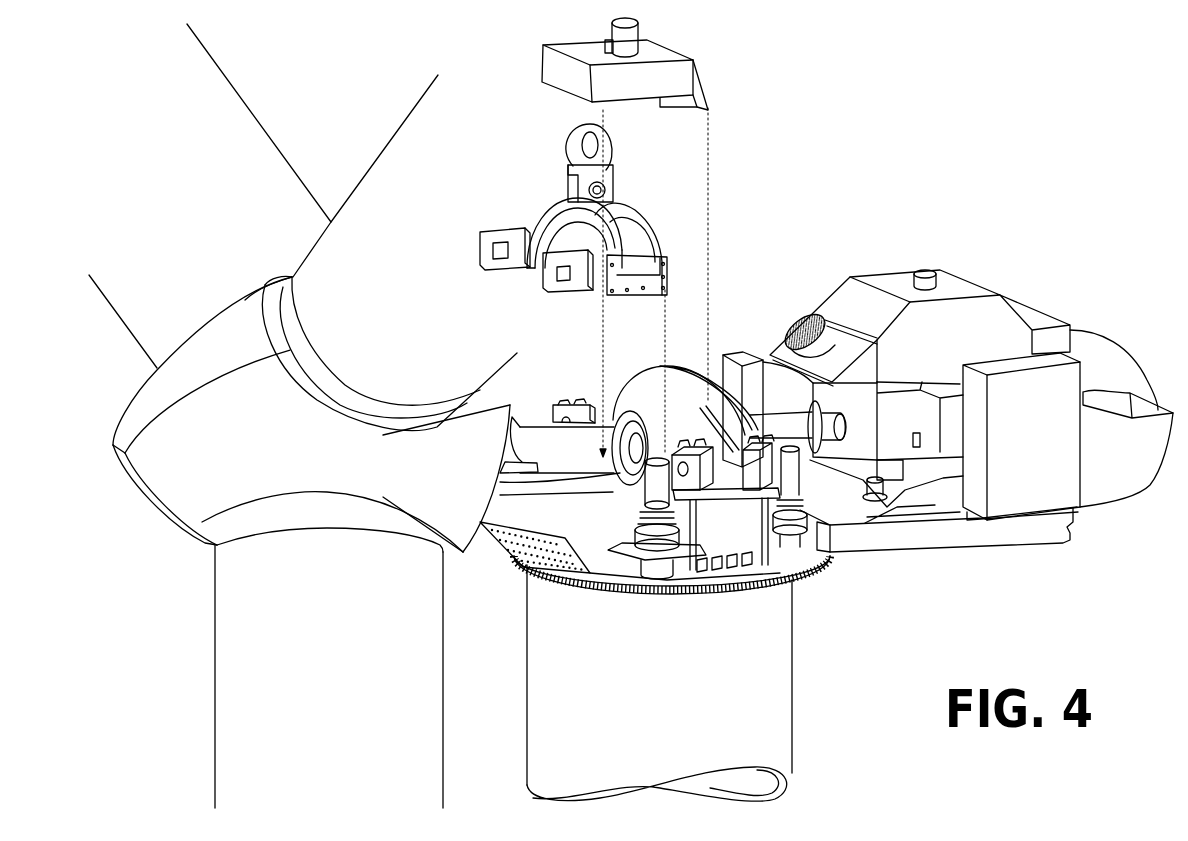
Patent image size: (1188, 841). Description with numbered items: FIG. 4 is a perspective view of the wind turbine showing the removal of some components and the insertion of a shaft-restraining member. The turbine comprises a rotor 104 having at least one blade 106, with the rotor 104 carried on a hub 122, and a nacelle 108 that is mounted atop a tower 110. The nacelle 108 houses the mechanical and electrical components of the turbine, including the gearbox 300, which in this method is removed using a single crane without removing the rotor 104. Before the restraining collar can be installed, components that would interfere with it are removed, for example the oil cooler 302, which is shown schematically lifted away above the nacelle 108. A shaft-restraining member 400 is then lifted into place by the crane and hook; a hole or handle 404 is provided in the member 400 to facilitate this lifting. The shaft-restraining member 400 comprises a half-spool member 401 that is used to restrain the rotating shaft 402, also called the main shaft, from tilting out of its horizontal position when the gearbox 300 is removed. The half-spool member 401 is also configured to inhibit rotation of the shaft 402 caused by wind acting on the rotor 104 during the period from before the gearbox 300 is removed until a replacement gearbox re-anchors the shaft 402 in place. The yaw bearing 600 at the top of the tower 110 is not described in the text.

The rotor 104 is at (218, 264).
The blade 106 is at (412, 148).
The nacelle 108 is at (811, 208).
The tower 110 is at (788, 687).
The hub 122 is at (212, 330).
The gearbox 300 is at (742, 355).
The oil cooler 302 is at (663, 42).
The shaft-restraining member 400 is at (563, 196).
The half-spool member 401 is at (540, 208).
The rotating shaft 402 is at (545, 415).
The handle 404 is at (582, 138).
The yaw bearing 600 is at (640, 503).